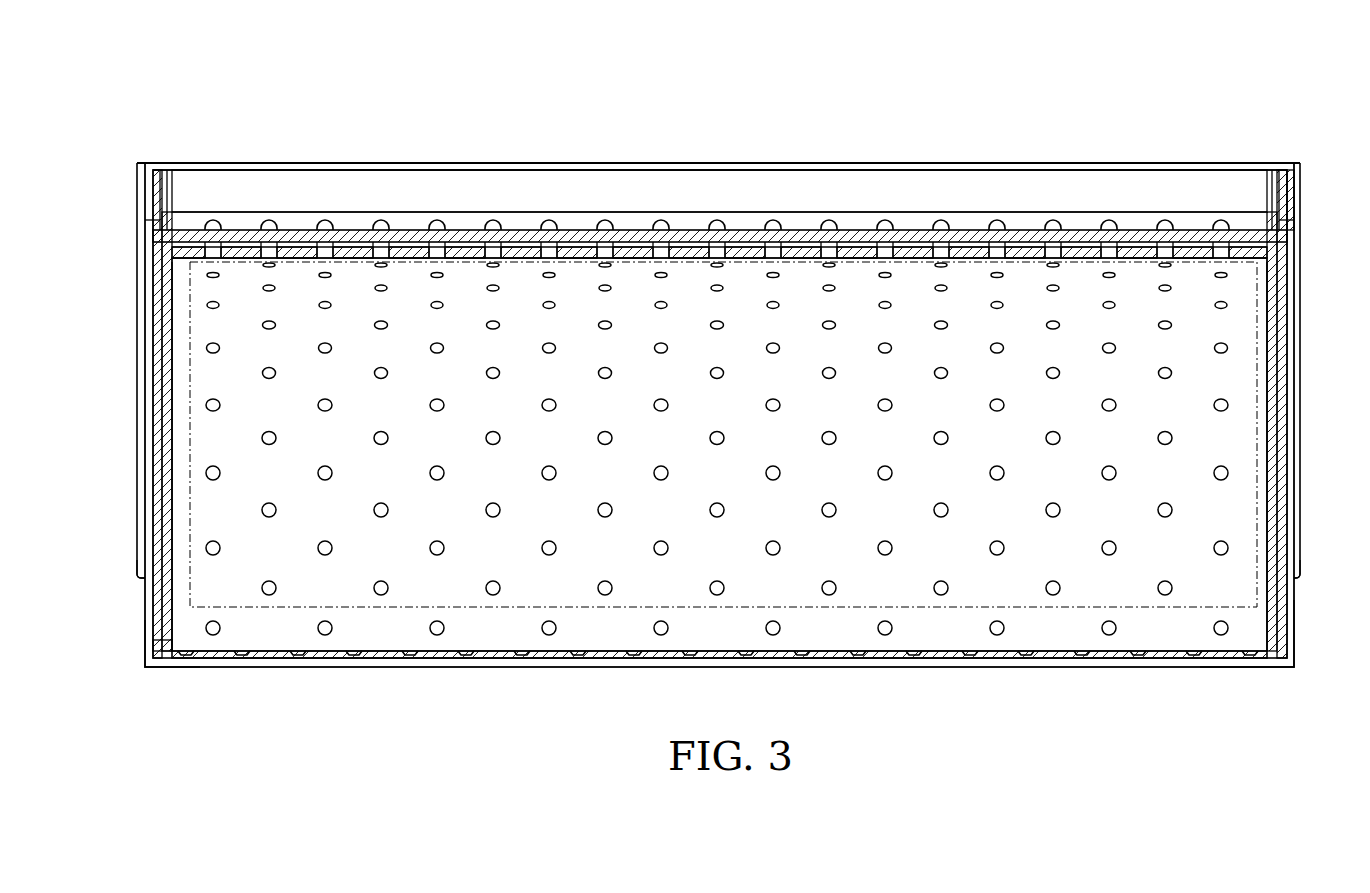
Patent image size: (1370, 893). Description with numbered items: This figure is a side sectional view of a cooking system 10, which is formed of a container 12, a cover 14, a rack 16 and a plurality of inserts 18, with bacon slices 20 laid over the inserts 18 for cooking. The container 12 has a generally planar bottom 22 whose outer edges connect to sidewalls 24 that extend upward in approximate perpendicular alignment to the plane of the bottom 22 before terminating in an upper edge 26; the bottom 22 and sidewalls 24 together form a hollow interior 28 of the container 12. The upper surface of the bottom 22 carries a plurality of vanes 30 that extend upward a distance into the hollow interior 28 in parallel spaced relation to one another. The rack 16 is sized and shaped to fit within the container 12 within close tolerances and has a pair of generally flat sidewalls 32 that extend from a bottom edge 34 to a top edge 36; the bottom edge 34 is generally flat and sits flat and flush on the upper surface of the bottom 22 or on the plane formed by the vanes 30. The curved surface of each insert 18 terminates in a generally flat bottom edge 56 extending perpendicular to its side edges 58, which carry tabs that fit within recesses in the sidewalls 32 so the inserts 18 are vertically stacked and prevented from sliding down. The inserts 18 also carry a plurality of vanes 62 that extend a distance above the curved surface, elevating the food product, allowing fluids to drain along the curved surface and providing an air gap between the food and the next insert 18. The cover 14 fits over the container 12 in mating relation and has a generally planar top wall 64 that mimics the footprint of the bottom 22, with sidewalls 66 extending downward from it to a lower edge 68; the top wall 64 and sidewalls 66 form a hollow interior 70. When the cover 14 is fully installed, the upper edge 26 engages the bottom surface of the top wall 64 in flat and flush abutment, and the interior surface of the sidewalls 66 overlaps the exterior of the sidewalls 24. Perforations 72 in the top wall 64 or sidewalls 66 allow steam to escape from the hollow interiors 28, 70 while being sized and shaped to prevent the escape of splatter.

The cooking system 10 is at (1190, 84).
The container 12 is at (1219, 673).
The cover 14 is at (1247, 162).
The rack 16 is at (170, 662).
The inserts 18 is at (797, 224).
The bacon slices 20 is at (232, 245).
The bottom 22 is at (890, 660).
The sidewalls 24 is at (151, 512).
The upper edge 26 is at (146, 200).
The hollow interior 28 is at (719, 191).
The vanes 30 is at (580, 657).
The sidewalls 32 is at (158, 478).
The bottom edge 34 is at (273, 656).
The top edge 36 is at (338, 240).
The bottom edge 56 is at (966, 610).
The side edges 58 is at (190, 545).
The vanes 62 is at (640, 254).
The top wall 64 is at (658, 164).
The sidewalls 66 is at (147, 362).
The lower edge 68 is at (141, 579).
The hollow interior 70 is at (1288, 168).
The perforations 72 is at (370, 163).